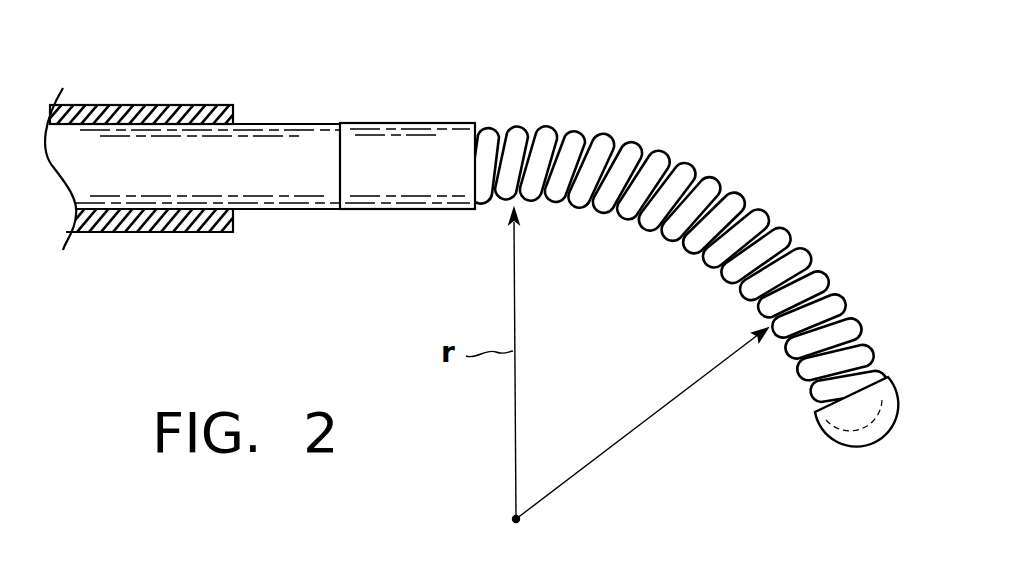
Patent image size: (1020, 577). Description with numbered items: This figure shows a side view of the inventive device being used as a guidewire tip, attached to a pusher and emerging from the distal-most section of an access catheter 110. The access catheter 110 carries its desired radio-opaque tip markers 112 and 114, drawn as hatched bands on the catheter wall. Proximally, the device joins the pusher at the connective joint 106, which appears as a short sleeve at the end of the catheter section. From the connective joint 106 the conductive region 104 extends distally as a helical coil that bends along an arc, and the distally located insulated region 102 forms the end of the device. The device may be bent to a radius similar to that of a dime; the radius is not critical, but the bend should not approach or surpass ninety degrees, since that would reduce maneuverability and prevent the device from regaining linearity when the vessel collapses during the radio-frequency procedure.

The insulated region 102 is at (803, 372).
The conductive region 104 is at (717, 172).
The connective joint 106 is at (405, 123).
The access catheter 110 is at (142, 234).
The radio-opaque tip marker 112 is at (100, 105).
The radio-opaque tip marker 114 is at (187, 105).